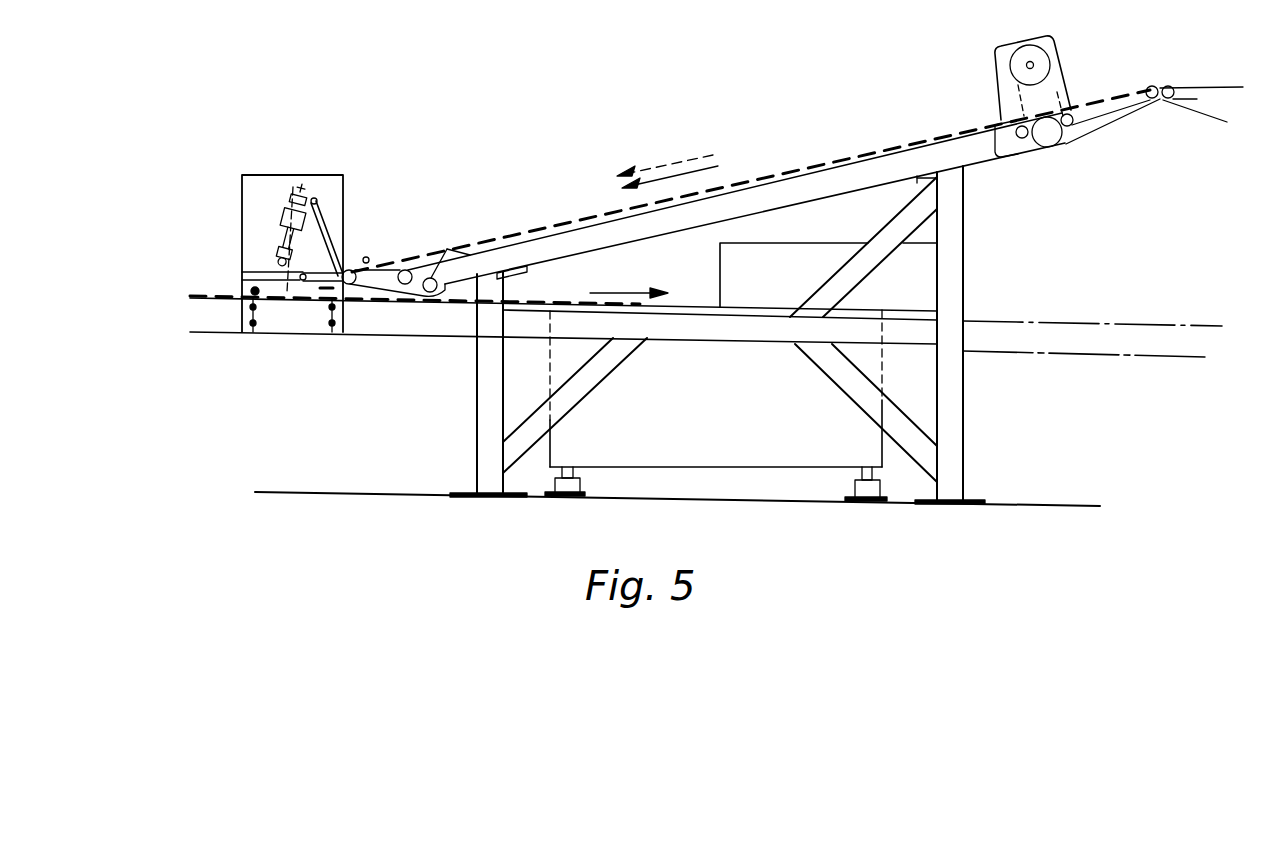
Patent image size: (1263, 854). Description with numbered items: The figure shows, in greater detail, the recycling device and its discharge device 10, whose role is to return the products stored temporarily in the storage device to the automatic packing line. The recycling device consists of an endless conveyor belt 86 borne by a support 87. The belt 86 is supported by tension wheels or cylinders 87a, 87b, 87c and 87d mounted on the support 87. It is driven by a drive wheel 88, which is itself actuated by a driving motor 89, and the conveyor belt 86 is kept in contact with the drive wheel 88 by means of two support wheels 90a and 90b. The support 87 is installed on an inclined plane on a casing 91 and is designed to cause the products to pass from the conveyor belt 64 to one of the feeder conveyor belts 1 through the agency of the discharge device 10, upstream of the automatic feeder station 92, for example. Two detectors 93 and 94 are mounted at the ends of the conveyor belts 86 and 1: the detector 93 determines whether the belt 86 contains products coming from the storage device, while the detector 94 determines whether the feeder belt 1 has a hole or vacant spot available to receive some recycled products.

The feeder conveyor belt 1 is at (213, 318).
The discharge device 10 is at (262, 196).
The conveyor belt 64 is at (1236, 85).
The endless conveyor belt 86 is at (778, 165).
The support 87 is at (736, 198).
The tension wheel 87a is at (366, 257).
The tension wheel 87b is at (410, 270).
The tension wheel 87c is at (436, 278).
The tension wheel 87d is at (1152, 85).
The drive wheel 88 is at (1049, 148).
The driving motor 89 is at (1003, 98).
The support wheel 90a is at (1021, 139).
The support wheel 90b is at (1090, 136).
The casing 91 is at (652, 284).
The automatic feeder station 92 is at (722, 404).
The detector 93 is at (354, 272).
The detector 94 is at (255, 291).